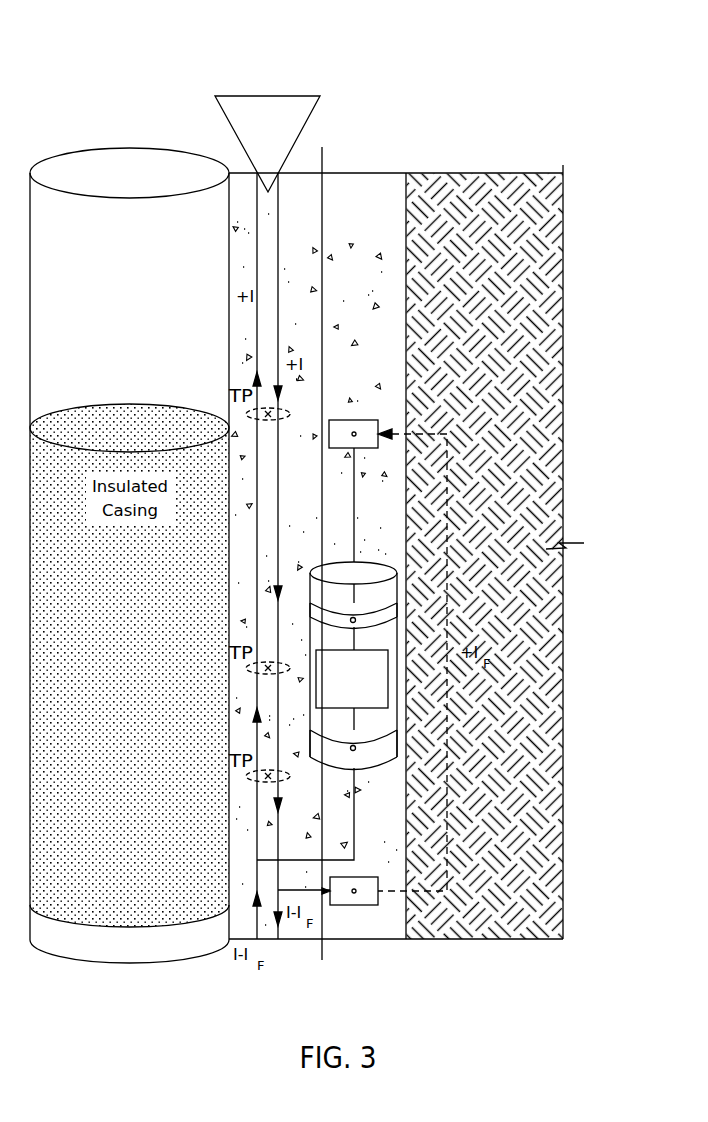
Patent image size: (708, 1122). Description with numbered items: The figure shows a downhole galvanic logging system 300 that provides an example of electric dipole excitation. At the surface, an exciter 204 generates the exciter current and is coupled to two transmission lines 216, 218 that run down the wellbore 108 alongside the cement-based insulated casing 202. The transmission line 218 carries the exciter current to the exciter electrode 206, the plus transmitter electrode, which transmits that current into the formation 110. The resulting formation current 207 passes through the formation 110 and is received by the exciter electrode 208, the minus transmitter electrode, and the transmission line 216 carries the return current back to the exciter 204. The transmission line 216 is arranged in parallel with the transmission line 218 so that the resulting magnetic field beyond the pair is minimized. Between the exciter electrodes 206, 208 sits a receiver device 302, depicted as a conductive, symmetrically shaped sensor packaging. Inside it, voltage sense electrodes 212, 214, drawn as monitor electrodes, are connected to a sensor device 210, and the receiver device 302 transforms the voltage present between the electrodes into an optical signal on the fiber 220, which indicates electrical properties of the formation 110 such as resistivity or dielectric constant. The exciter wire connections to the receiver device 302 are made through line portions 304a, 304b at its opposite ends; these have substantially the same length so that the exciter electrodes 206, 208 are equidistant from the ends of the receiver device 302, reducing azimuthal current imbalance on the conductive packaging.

The downhole galvanic logging system 300 is at (573, 55).
The insulated casing 202 is at (62, 155).
The exciter 204 is at (251, 131).
The wellbore 108 is at (341, 280).
The formation 110 is at (471, 320).
The transmission line 216 is at (257, 232).
The transmission line 218 is at (278, 200).
The fiber 220 is at (322, 318).
The exciter electrode 208 is at (365, 420).
The exciter electrode 206 is at (365, 877).
The formation current 207 is at (447, 482).
The receiver device 302 is at (377, 633).
The sensor device 210 is at (336, 690).
The voltage sense electrode 212 is at (390, 607).
The voltage sense electrode 214 is at (390, 735).
The line portion 304a is at (354, 463).
The line portion 304b is at (354, 795).